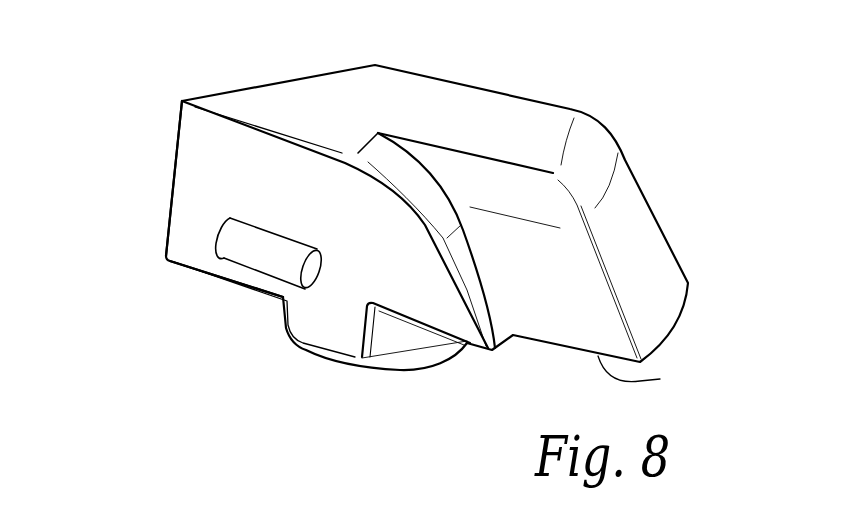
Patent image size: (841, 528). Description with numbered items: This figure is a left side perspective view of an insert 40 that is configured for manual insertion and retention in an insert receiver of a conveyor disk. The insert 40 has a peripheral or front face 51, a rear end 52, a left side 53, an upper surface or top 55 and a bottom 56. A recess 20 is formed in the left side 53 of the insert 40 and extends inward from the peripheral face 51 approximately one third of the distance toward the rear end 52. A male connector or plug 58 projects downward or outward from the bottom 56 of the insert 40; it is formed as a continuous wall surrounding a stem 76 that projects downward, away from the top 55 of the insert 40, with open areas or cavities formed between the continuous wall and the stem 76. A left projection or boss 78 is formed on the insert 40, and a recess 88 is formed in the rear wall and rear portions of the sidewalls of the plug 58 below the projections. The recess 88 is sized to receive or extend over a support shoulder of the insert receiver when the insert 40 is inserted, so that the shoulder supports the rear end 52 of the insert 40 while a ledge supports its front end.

The insert 40 is at (663, 52).
The recess 20 is at (465, 187).
The peripheral face 51 is at (628, 230).
The rear end 52 is at (176, 131).
The left side 53 is at (271, 200).
The top 55 is at (319, 105).
The bottom 56 is at (660, 379).
The male connector 58 is at (300, 346).
The stem 76 is at (398, 368).
The left projection 78 is at (233, 238).
The recess 88 is at (183, 268).